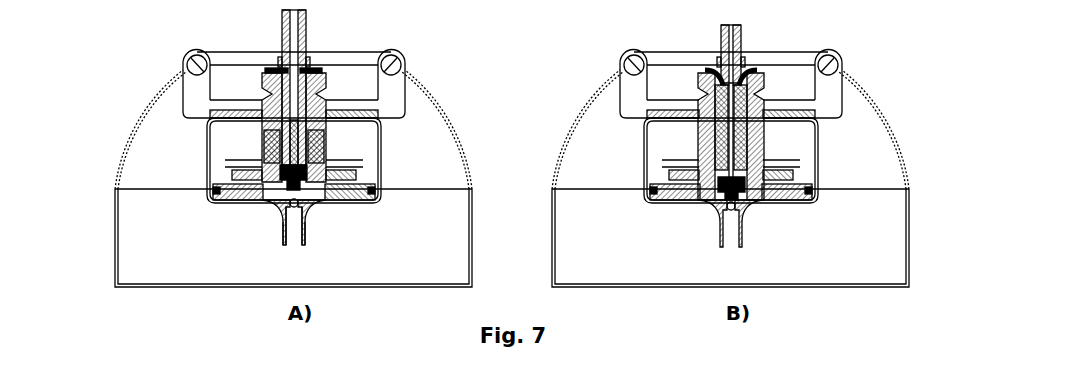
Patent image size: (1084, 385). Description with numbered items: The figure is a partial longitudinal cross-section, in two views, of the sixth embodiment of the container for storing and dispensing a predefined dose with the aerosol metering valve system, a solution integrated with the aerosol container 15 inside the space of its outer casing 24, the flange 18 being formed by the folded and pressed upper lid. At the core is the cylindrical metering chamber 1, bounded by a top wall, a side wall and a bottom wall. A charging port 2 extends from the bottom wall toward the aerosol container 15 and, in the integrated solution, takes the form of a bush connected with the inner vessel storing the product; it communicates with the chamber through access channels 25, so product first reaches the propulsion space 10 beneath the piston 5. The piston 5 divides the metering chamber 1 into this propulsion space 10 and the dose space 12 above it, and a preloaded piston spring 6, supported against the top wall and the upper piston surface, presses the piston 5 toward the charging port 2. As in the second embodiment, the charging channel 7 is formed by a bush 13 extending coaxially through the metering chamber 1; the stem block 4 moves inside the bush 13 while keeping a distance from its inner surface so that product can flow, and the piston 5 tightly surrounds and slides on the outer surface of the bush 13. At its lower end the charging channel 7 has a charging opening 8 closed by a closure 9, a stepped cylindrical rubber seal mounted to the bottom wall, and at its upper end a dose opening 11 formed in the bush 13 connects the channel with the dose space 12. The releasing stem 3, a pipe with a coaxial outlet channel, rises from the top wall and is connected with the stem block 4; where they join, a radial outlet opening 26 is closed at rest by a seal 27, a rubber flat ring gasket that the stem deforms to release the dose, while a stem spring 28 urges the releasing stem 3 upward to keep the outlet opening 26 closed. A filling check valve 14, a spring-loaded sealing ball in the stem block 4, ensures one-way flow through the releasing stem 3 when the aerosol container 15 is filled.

The metering chamber 1 is at (653, 152).
The charging port 2 is at (306, 223).
The releasing stem 3 is at (738, 38).
The stem block 4 is at (312, 89).
The piston 5 is at (233, 177).
The piston spring 6 is at (340, 152).
The charging channel 7 is at (713, 148).
The charging opening 8 is at (294, 189).
The closure 9 is at (722, 186).
The propulsion space 10 is at (792, 160).
The dose opening 11 is at (267, 135).
The dose space 12 is at (228, 142).
The bush 13 is at (703, 163).
The filling check valve 14 is at (290, 134).
The aerosol container 15 is at (106, 257).
The flange 18 is at (637, 72).
The outer casing 24 is at (910, 280).
The access channels 25 is at (757, 192).
The outlet opening 26 is at (745, 83).
The seal 27 is at (760, 75).
The stem spring 28 is at (278, 171).